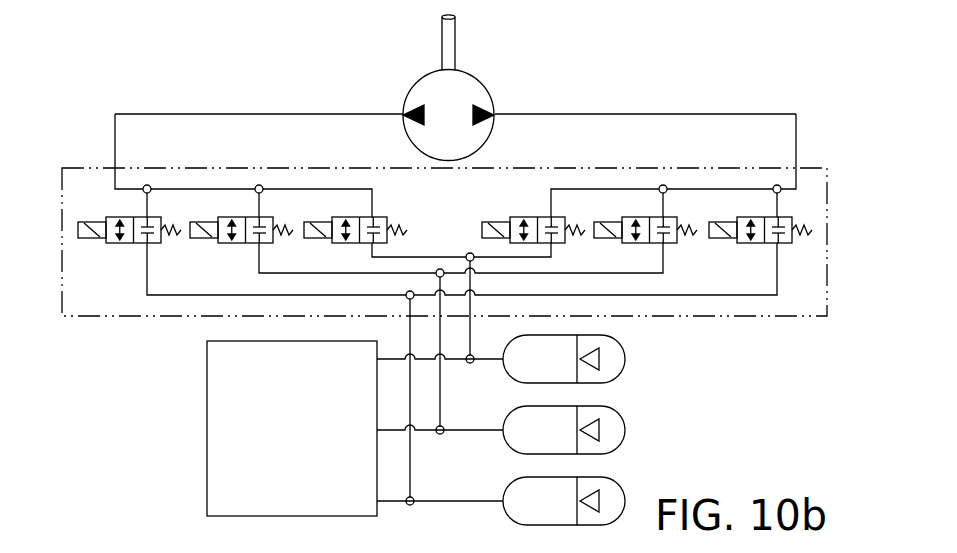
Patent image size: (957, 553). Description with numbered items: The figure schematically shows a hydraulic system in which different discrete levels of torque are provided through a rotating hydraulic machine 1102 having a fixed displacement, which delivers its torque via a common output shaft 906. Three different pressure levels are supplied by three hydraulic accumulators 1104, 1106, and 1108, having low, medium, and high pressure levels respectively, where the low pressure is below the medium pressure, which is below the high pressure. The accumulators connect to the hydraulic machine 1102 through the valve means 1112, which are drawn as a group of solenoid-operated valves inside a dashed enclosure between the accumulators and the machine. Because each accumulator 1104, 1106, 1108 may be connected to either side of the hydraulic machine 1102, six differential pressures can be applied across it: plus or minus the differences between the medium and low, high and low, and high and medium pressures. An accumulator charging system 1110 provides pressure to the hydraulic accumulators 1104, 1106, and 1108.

The common output shaft 906 is at (448, 43).
The rotating hydraulic machine 1102 is at (481, 79).
The hydraulic accumulator 1104 is at (625, 357).
The hydraulic accumulator 1106 is at (625, 428).
The hydraulic accumulator 1108 is at (625, 496).
The accumulator charging system 1110 is at (207, 428).
The valve means 1112 is at (758, 320).